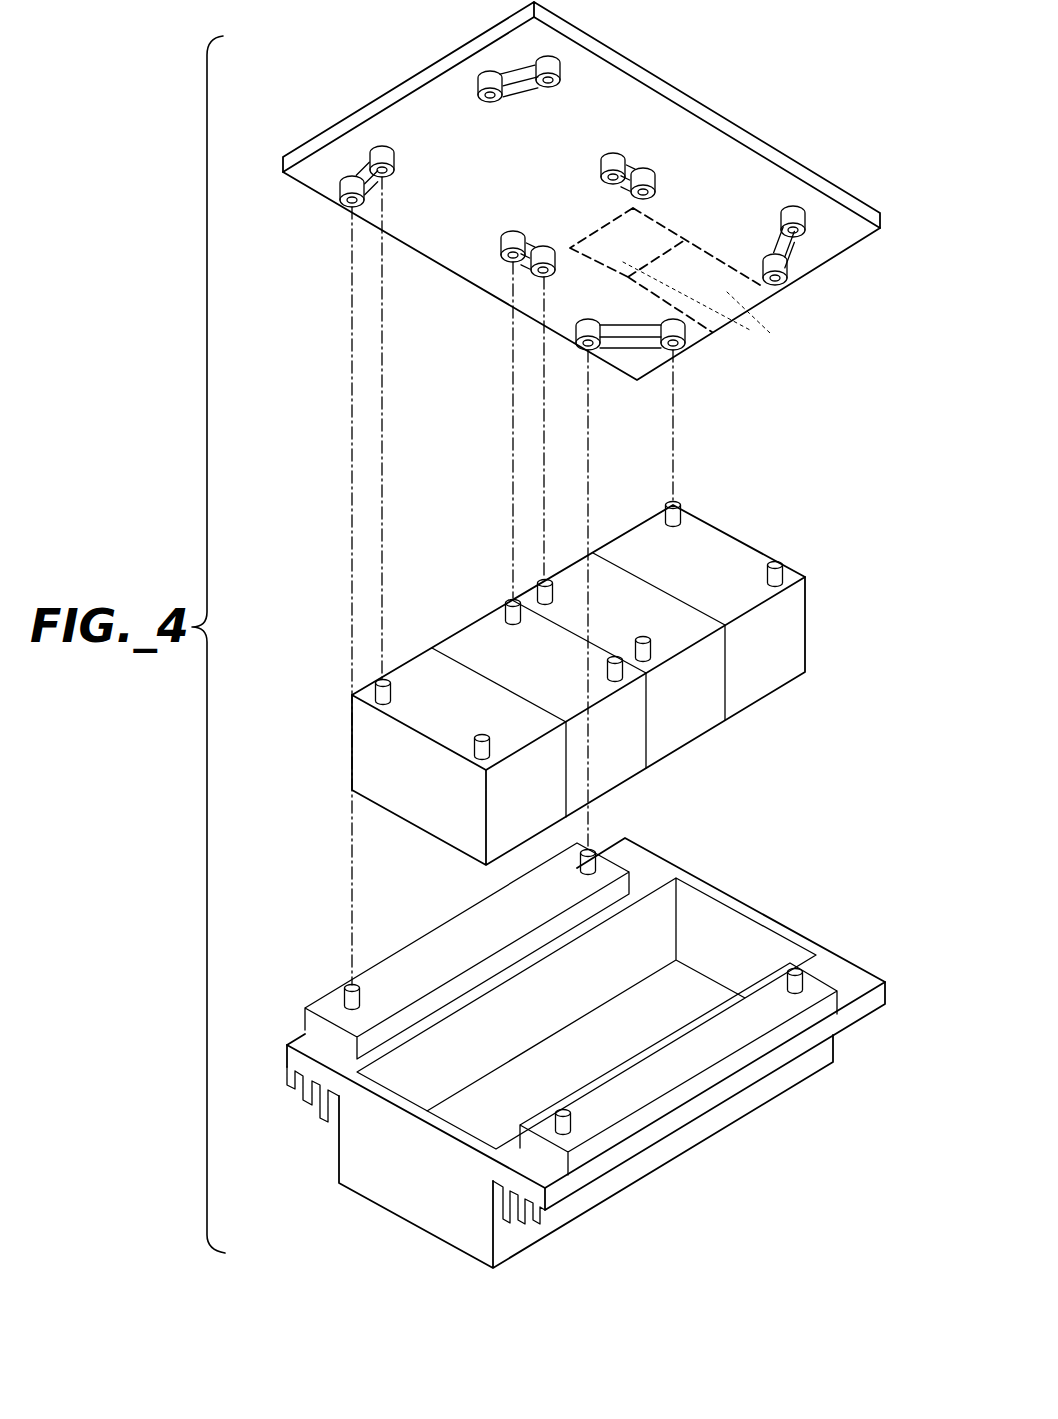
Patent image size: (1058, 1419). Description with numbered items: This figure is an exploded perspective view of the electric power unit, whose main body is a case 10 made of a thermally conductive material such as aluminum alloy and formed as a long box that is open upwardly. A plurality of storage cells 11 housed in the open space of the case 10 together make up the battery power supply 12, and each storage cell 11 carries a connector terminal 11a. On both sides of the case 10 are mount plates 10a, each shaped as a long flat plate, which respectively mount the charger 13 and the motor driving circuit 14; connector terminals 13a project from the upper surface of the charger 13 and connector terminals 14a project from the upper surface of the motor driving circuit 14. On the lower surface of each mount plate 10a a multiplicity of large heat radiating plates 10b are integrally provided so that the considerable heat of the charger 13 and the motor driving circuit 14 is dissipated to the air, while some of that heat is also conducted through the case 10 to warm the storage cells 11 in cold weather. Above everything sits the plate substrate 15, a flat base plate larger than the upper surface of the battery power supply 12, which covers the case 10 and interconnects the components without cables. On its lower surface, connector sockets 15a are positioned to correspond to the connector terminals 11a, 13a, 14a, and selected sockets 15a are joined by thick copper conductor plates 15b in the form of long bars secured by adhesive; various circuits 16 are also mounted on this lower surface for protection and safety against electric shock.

The case 10 is at (413, 1205).
The mount plate 10a is at (630, 862).
The heat radiating plate 10b is at (322, 1110).
The storage cell 11 is at (458, 680).
The connector terminal 11a is at (678, 508).
The battery power supply 12 is at (805, 571).
The charger 13 is at (657, 1073).
The connector terminal 13a is at (796, 965).
The motor driving circuit 14 is at (493, 927).
The connector terminal 14a is at (351, 983).
The plate substrate 15 is at (703, 106).
The connector socket 15a is at (613, 158).
The conductor plate 15b is at (520, 68).
The various circuits 16 is at (757, 322).